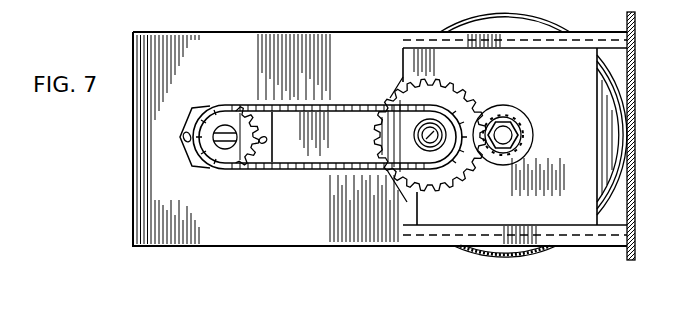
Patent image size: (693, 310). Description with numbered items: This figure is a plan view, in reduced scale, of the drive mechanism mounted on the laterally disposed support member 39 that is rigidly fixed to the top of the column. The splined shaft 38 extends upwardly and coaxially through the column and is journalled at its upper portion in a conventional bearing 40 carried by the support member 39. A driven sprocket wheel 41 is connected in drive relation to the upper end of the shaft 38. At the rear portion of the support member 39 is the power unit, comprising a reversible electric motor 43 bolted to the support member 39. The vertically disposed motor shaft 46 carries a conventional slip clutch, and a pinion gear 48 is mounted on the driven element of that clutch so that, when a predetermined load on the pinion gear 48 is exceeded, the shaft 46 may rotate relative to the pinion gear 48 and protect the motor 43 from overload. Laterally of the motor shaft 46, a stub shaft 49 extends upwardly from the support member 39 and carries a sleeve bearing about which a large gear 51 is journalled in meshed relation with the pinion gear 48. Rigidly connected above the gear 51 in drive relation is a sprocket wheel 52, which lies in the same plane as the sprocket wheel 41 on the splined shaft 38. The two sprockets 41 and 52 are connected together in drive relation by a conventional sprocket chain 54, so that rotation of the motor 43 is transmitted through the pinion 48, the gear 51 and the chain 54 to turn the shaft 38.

The support member 39 is at (181, 68).
The driven sprocket wheel 41 is at (242, 104).
The shaft 38 is at (222, 150).
The sprocket chain 54 is at (327, 105).
The bearing 40 is at (272, 123).
The large gear 51 is at (438, 88).
The stub shaft 49 is at (434, 133).
The sprocket wheel 52 is at (452, 148).
The motor shaft 46 is at (512, 128).
The pinion gear 48 is at (530, 142).
The reversible electric motor 43 is at (622, 94).